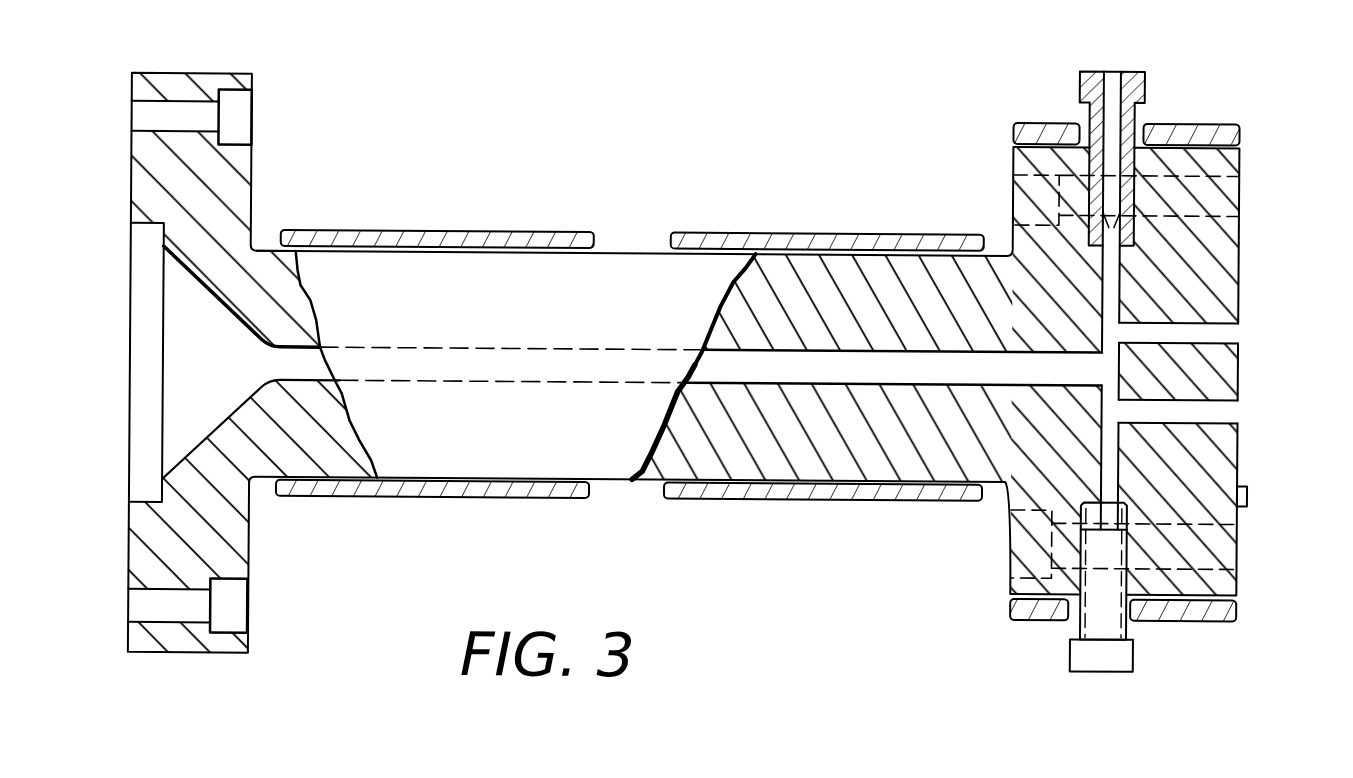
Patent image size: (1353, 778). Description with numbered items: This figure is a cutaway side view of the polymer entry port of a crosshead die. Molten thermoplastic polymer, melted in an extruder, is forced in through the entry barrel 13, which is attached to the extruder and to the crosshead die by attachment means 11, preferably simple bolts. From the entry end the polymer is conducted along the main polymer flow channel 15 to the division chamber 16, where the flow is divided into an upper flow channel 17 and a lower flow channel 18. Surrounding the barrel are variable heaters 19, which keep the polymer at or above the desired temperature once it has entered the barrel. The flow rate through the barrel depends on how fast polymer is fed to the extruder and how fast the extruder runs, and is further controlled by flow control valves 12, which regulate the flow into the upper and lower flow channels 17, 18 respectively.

The attachment means 11 is at (1012, 170).
The flow control valves 12 is at (1143, 75).
The entry barrel 13 is at (602, 479).
The main polymer flow channel 15 is at (305, 378).
The division chamber 16 is at (1110, 294).
The upper flow channel 17 is at (1218, 322).
The lower flow channel 18 is at (1215, 417).
The variable heaters 19 is at (673, 230).